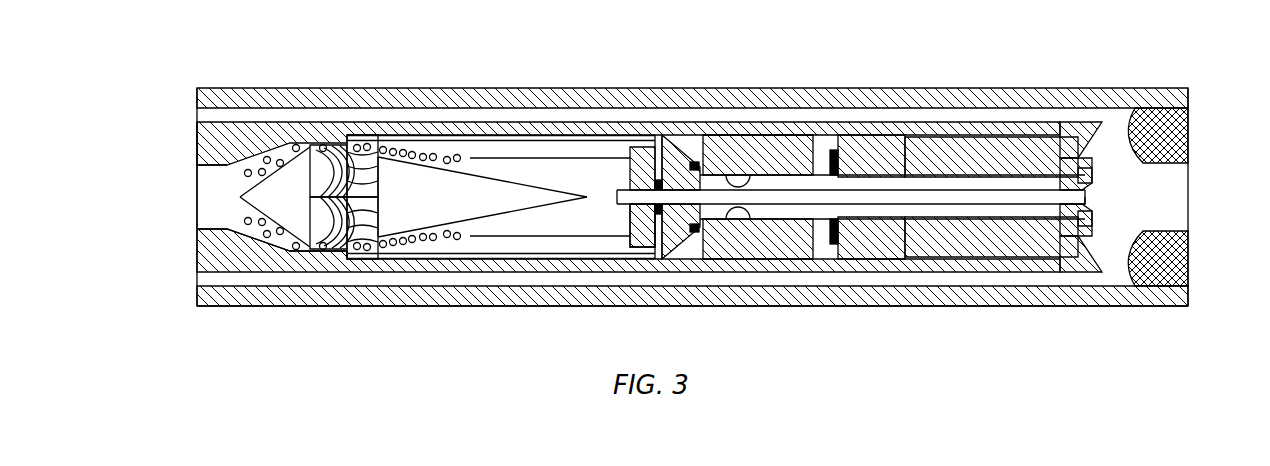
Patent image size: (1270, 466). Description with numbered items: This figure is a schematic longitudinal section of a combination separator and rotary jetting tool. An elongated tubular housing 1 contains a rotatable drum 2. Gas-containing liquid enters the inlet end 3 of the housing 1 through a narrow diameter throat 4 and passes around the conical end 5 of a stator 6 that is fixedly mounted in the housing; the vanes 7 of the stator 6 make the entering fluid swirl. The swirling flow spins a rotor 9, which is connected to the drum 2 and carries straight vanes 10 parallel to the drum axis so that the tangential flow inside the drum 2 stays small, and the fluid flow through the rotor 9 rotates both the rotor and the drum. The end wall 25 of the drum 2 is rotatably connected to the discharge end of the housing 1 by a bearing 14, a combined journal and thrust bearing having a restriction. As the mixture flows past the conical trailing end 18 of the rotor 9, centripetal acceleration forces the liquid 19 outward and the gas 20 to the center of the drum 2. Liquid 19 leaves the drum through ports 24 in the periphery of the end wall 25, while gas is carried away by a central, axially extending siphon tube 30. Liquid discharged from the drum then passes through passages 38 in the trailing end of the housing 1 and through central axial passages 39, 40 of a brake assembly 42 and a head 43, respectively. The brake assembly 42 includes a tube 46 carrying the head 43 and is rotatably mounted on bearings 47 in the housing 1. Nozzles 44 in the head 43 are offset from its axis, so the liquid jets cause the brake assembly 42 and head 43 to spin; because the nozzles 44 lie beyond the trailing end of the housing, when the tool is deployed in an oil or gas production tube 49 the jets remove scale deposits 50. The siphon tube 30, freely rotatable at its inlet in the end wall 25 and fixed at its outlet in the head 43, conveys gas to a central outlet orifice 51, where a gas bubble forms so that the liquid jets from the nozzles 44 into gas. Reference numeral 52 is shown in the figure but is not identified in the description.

The tubular housing 1 is at (497, 88).
The rotatable drum 2 is at (532, 128).
The inlet end 3 is at (197, 130).
The throat 4 is at (197, 210).
The conical end 5 is at (212, 262).
The stator 6 is at (273, 205).
The vanes 7 is at (326, 228).
The rotor 9 is at (347, 140).
The straight vanes 10 is at (353, 222).
The bearing 14 is at (648, 250).
The conical trailing end 18 is at (462, 222).
The liquid 19 is at (450, 136).
The gas 20 is at (545, 212).
The ports 24 is at (652, 140).
The end wall 25 is at (630, 212).
The siphon tube 30 is at (625, 148).
The passages 38 is at (695, 160).
The central axial passage 39 is at (745, 140).
The central axial passage 40 is at (1018, 178).
The brake assembly 42 is at (790, 135).
The head 43 is at (960, 140).
The nozzles 44 is at (1070, 145).
The tube 46 is at (885, 145).
The bearings 47 is at (704, 158).
The production tube 49 is at (930, 306).
The scale deposits 50 is at (1188, 132).
The central outlet orifice 51 is at (1092, 204).
The retainer 52 is at (1092, 180).